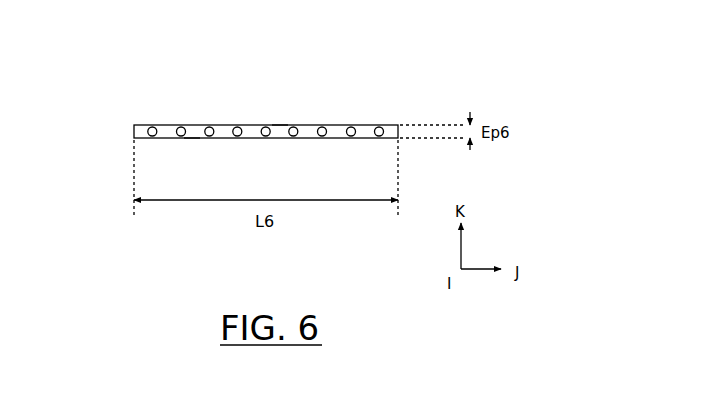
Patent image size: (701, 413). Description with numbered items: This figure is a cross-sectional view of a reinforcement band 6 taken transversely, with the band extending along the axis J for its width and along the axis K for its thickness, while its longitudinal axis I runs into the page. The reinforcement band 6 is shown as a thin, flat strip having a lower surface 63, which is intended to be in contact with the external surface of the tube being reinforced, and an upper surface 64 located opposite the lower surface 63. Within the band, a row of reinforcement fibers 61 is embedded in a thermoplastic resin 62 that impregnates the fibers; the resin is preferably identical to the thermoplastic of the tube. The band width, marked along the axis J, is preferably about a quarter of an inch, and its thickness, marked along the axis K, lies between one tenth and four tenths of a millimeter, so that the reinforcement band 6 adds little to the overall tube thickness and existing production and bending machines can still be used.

The reinforcement band 6 is at (110, 128).
The reinforcement fibers 61 is at (238, 127).
The thermoplastic resin 62 is at (280, 130).
The lower surface 63 is at (192, 139).
The upper surface 64 is at (162, 124).